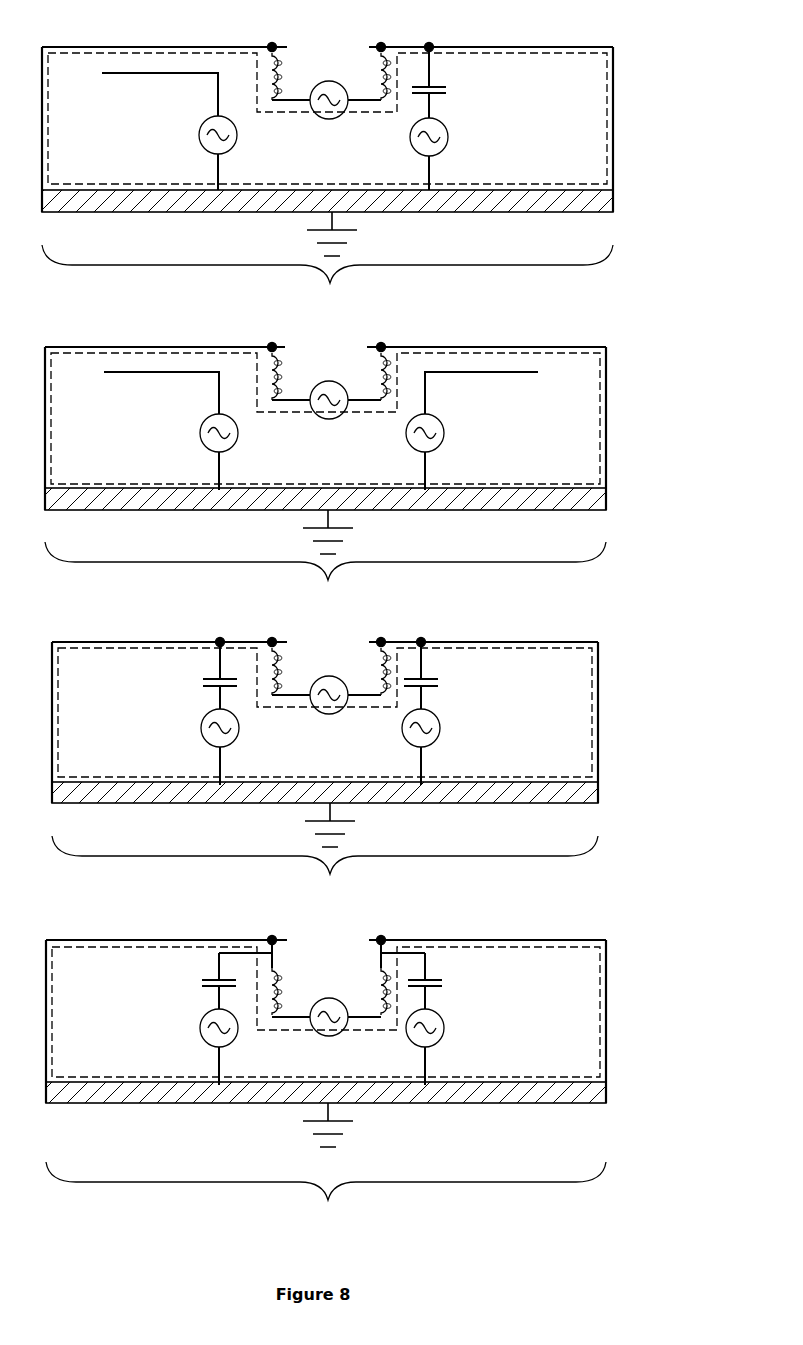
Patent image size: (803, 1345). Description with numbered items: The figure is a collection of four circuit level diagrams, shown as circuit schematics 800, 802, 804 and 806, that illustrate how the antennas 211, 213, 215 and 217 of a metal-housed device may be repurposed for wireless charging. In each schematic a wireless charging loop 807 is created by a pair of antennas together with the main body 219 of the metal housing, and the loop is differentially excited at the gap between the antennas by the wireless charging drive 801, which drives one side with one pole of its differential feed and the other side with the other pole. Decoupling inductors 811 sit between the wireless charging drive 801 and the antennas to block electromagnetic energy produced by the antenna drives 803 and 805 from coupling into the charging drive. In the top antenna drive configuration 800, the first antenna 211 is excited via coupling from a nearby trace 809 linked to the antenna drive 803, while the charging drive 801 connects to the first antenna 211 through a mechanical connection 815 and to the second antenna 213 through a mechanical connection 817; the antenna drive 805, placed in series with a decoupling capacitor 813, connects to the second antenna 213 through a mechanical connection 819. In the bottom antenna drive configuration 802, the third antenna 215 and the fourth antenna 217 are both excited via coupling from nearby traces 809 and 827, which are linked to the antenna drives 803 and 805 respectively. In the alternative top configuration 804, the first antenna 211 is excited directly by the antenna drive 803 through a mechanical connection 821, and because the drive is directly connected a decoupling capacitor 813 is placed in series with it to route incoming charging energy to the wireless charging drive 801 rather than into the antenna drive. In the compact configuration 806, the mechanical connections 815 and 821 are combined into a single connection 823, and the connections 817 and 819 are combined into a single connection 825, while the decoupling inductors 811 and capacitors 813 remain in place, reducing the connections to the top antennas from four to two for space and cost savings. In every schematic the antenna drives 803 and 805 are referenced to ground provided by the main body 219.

The ant-1 antenna 211 is at (197, 46).
The ant-2 antenna 213 is at (503, 46).
The ant-3 antenna 215 is at (197, 346).
The ant-4 antenna 217 is at (497, 346).
The main body of the metal housing 219 is at (276, 213).
The top antenna drive configuration circuit schematic 800 is at (327, 276).
The wireless charging drive 801 is at (328, 121).
The bottom antenna drive configuration circuit schematic 802 is at (325, 572).
The antenna drive 803 is at (198, 136).
The alternative top antenna drive configuration circuit schematic 804 is at (325, 867).
The antenna drive 805 is at (452, 142).
The compact top antenna drive configuration circuit schematic 806 is at (326, 1192).
The wireless charging loop 807 is at (610, 95).
The nearby trace 809 is at (147, 82).
The decoupling inductor 811 is at (288, 80).
The decoupling capacitor 813 is at (458, 92).
The mechanical connection 815 is at (272, 43).
The mechanical connection 817 is at (381, 43).
The mechanical connection 819 is at (429, 43).
The mechanical connection 821 is at (220, 638).
The combined mechanical connection 823 is at (272, 936).
The combined mechanical connection 825 is at (381, 936).
The nearby trace 827 is at (546, 376).